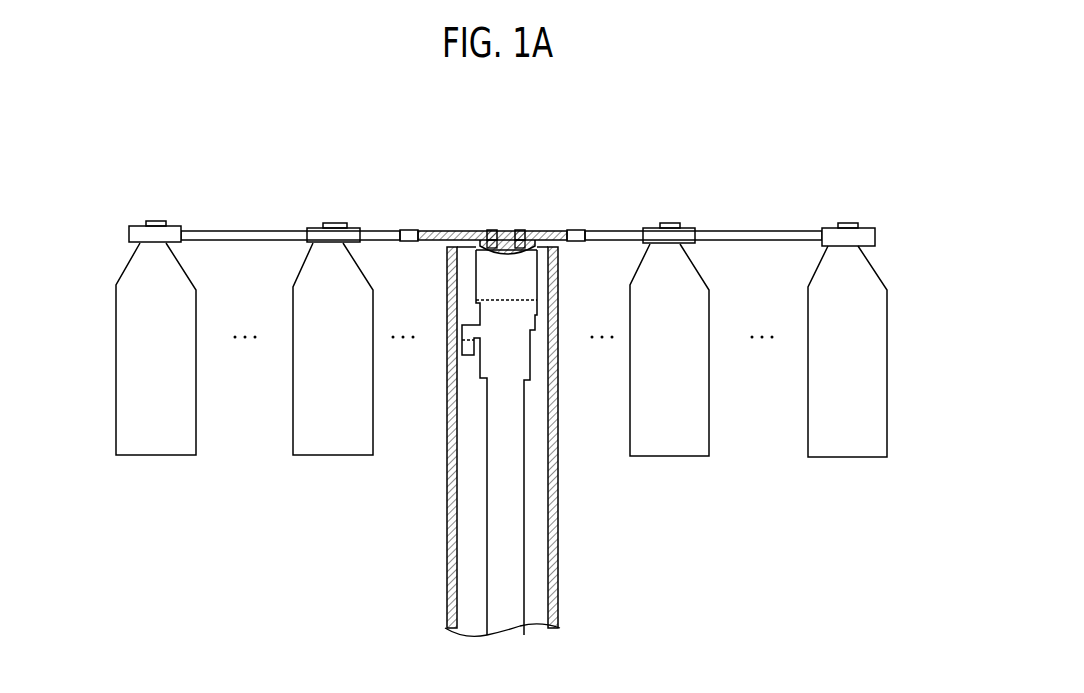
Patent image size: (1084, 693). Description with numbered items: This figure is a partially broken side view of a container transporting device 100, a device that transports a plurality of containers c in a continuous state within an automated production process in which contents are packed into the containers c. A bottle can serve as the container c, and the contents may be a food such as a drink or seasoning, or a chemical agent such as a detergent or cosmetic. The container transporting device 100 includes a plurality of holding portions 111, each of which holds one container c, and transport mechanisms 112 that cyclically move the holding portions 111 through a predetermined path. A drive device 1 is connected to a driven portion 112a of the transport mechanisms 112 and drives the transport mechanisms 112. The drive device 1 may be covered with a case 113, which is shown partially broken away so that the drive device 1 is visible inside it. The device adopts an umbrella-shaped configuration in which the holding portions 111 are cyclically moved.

The container transporting device 100 is at (804, 162).
The holding portion 111 is at (173, 226).
The transport mechanism 112 is at (246, 232).
The driven portion 112a is at (540, 233).
The case 113 is at (560, 547).
The drive device 1 is at (488, 568).
The container c is at (119, 418).